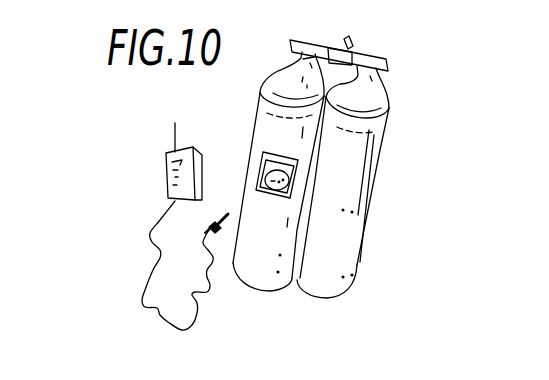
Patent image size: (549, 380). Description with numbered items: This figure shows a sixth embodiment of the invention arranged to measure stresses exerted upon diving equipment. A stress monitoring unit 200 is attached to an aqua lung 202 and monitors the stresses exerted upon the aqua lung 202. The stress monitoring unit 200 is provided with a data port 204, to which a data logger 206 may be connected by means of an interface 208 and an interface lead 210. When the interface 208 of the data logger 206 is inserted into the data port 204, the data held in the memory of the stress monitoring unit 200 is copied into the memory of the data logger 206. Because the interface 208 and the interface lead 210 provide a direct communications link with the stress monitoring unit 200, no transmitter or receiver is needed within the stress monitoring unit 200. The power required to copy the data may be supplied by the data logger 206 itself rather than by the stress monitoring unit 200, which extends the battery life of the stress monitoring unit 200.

The stress monitoring unit 200 is at (271, 187).
The aqua lung 202 is at (327, 250).
The data port 204 is at (269, 167).
The data logger 206 is at (165, 179).
The interface 208 is at (228, 219).
The interface lead 210 is at (141, 297).